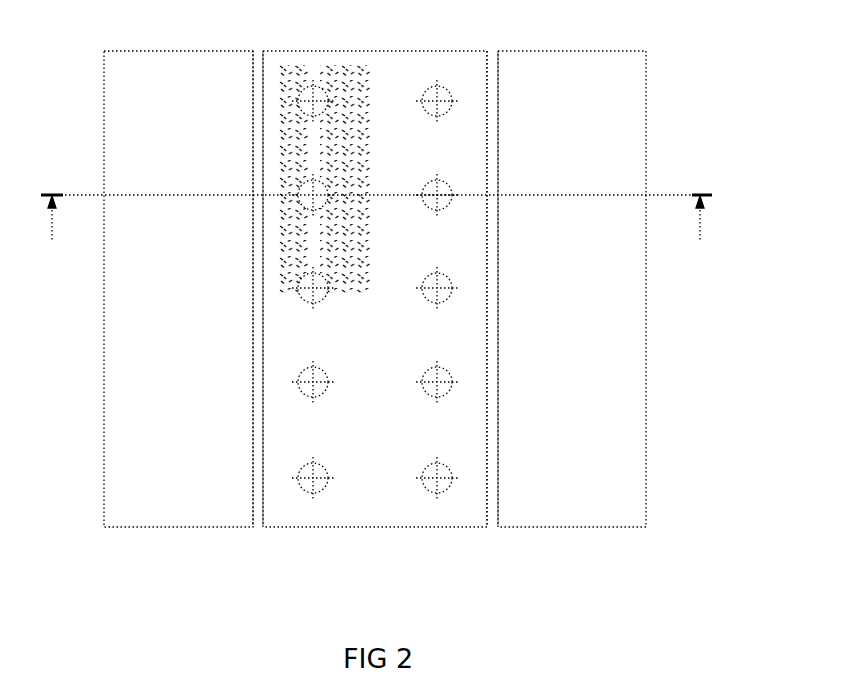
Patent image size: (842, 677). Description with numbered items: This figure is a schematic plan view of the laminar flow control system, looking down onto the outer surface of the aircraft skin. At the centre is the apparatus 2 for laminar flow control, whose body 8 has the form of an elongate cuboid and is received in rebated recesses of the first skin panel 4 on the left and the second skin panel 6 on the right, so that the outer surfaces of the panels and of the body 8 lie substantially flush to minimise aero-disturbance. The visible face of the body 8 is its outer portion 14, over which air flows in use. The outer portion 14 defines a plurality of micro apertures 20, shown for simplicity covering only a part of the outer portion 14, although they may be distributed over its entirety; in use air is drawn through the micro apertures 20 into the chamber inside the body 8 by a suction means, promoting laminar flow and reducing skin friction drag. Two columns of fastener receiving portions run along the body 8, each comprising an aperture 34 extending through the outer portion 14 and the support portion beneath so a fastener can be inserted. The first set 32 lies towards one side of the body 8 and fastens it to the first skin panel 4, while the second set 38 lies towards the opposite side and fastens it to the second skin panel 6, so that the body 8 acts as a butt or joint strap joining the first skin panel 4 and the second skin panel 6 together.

The apparatus for laminar flow control 2 is at (392, 302).
The first skin panel 4 is at (180, 70).
The second skin panel 6 is at (583, 70).
The body 8 is at (272, 527).
The outer portion 14 is at (488, 302).
The micro apertures 20 is at (293, 77).
The first set of fastener receiving portions 32 is at (347, 543).
The aperture 34 is at (579, 289).
The second set of fastener receiving portions 38 is at (575, 342).